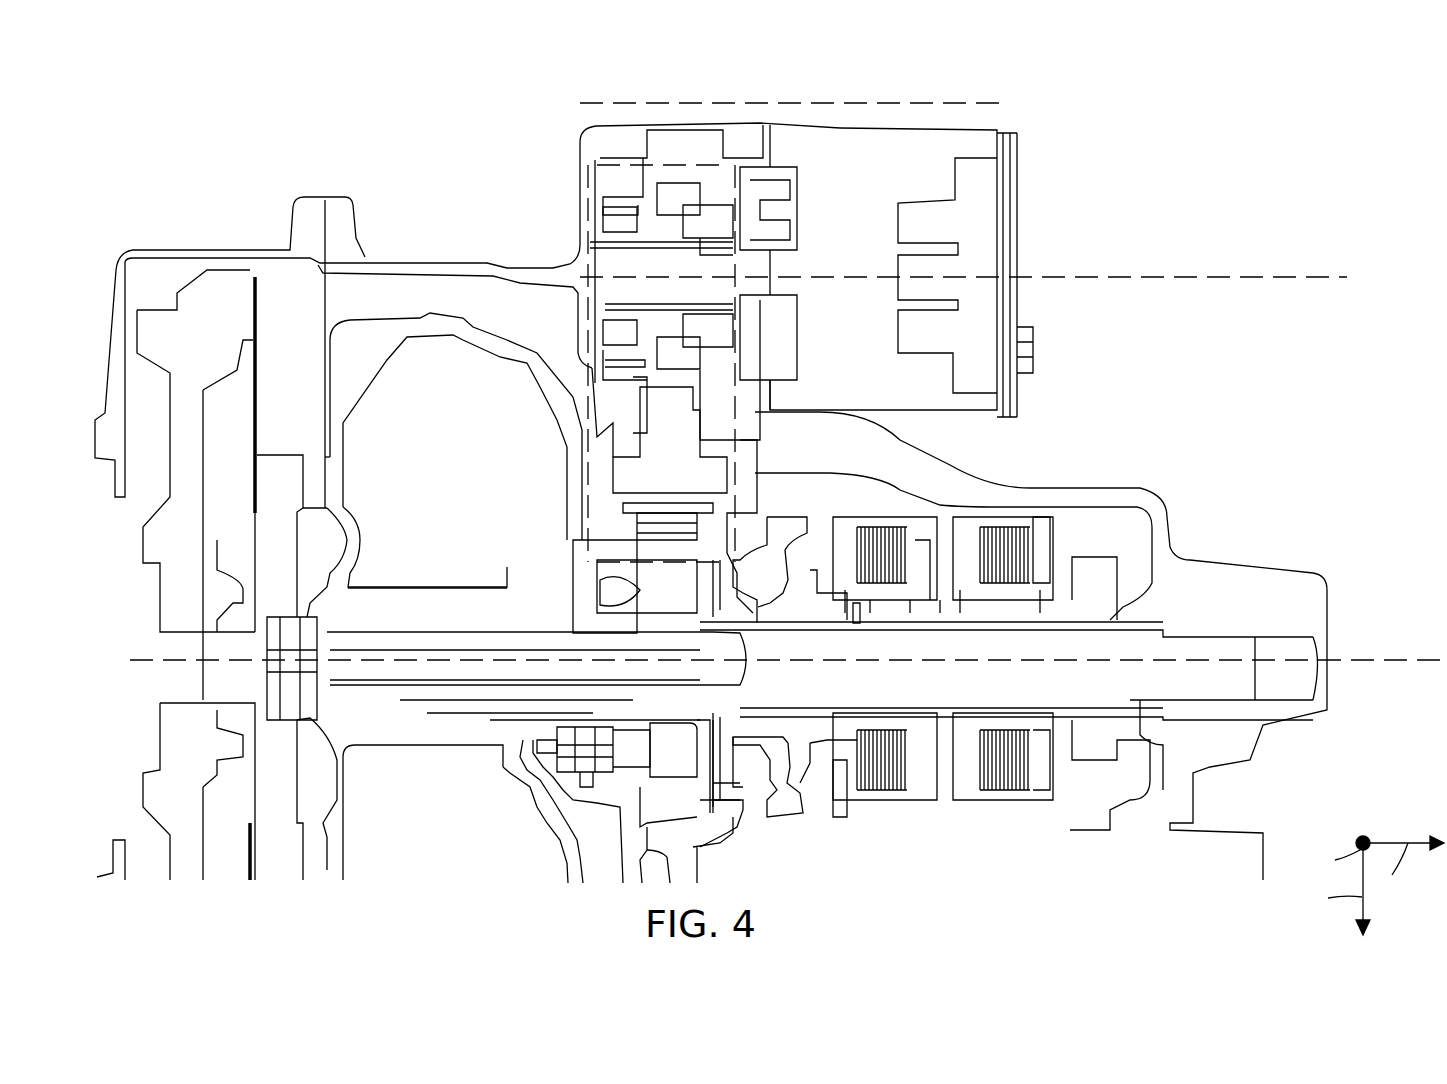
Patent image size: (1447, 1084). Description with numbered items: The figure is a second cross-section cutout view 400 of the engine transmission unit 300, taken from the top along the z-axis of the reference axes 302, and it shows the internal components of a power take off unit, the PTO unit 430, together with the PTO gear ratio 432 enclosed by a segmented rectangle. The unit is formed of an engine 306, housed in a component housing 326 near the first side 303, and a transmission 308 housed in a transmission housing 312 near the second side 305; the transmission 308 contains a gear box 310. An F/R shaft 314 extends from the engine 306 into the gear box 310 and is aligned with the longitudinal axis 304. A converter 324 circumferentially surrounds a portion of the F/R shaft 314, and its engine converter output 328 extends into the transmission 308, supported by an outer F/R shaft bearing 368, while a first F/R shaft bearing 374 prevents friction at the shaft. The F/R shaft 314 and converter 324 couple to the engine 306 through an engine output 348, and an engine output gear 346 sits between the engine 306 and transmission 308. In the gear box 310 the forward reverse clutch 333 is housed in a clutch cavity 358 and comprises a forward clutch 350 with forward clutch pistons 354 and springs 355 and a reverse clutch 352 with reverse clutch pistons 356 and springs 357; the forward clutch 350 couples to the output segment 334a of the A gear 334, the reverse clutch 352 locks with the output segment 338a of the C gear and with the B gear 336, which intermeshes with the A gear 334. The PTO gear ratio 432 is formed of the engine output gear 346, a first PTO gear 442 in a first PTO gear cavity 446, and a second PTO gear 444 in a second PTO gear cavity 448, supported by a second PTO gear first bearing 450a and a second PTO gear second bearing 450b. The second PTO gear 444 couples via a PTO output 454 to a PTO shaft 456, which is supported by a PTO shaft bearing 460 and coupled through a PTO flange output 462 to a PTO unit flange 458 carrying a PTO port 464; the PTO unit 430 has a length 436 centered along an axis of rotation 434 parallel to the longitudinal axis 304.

The engine transmission unit 300 is at (228, 114).
The reference axes 302 is at (1404, 816).
The first side 303 is at (113, 565).
The longitudinal axis 304 is at (147, 660).
The second side 305 is at (1432, 512).
The engine 306 is at (448, 176).
The transmission 308 is at (1122, 256).
The gear box 310 is at (1092, 418).
The transmission housing 312 is at (1085, 500).
The F/R shaft 314 is at (1232, 652).
The converter 324 is at (432, 318).
The component housing 326 is at (490, 268).
The engine converter output 328 is at (580, 610).
The forward reverse clutch 333 is at (946, 497).
The A gear 334 is at (790, 565).
The output segment of the A gear 334a is at (900, 740).
The B gear 336 is at (1115, 585).
The output segment of the C gear 338a is at (1018, 740).
The engine output gear 346 is at (665, 600).
The engine output 348 is at (325, 635).
The forward clutch 350 is at (885, 605).
The reverse clutch 352 is at (1015, 540).
The forward clutch pistons 354 is at (920, 605).
The springs 355 is at (880, 723).
The reverse clutch pistons 356 is at (960, 605).
The springs 357 is at (1010, 728).
The clutch cavity 358 is at (1040, 510).
The outer F/R shaft bearing 368 is at (645, 625).
The first F/R shaft bearing 374 is at (655, 625).
The second cross-section cutout view 400 is at (1155, 92).
The PTO unit 430 is at (790, 98).
The PTO gear ratio 432 is at (578, 158).
The axis of rotation 434 is at (1323, 278).
The length 436 is at (1005, 103).
The first PTO gear 442 is at (680, 477).
The second PTO gear 444 is at (660, 172).
The first PTO gear cavity 446 is at (640, 415).
The second PTO gear cavity 448 is at (672, 228).
The second PTO gear first bearing 450a is at (628, 235).
The second PTO gear second bearing 450b is at (723, 210).
The PTO output 454 is at (625, 265).
The PTO shaft 456 is at (883, 187).
The PTO unit flange 458 is at (1015, 260).
The PTO shaft bearing 460 is at (780, 230).
The PTO flange output 462 is at (960, 270).
The PTO port 464 is at (1035, 325).